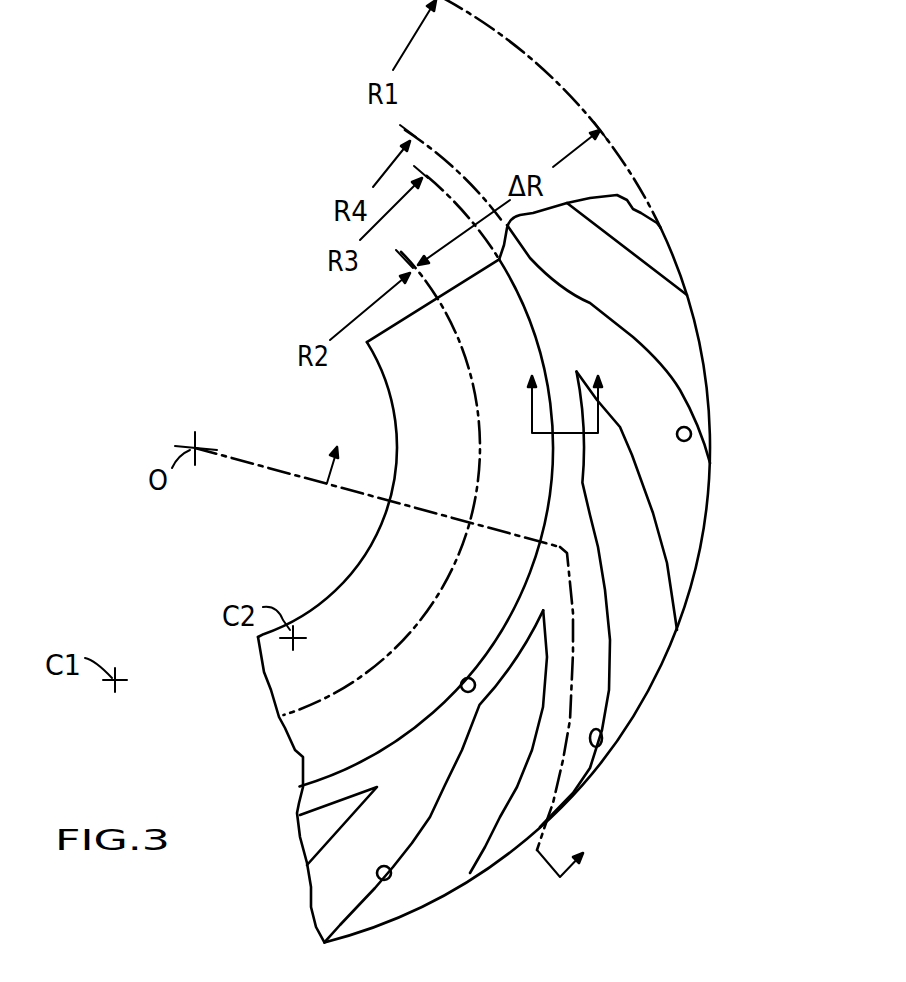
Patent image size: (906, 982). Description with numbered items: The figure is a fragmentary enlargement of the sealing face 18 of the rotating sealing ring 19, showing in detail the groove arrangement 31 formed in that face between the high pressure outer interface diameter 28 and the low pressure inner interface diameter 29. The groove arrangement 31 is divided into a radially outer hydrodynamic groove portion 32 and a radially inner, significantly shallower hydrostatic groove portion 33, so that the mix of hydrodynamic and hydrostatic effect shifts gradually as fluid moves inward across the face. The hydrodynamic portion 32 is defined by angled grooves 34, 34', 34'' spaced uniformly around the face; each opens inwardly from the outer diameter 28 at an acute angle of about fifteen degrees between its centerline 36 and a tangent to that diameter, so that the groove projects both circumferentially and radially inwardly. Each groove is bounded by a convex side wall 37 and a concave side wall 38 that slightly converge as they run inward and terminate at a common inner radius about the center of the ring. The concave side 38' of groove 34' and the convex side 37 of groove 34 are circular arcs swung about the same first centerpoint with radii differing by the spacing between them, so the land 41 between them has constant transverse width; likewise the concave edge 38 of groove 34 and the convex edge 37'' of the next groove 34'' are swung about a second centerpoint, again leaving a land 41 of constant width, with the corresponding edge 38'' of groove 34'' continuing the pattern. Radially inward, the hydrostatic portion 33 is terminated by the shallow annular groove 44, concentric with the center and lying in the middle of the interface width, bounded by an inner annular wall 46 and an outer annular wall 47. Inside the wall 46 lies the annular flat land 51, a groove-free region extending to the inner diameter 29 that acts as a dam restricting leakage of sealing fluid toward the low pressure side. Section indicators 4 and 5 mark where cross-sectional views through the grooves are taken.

The sealing face 18 is at (417, 584).
The sealing ring 19 is at (663, 230).
The outer interface diameter 28 is at (703, 340).
The inner interface diameter 29 is at (460, 343).
The groove arrangement 31 is at (617, 307).
The hydrodynamic groove portion 32 is at (307, 910).
The hydrostatic groove portion 33 is at (297, 808).
The angled groove 34 is at (608, 599).
The adjacent angled groove 34' is at (435, 796).
The next angled groove 34'' is at (740, 518).
The groove centerline 36 is at (573, 593).
The convex side wall 37 is at (517, 867).
The convex edge of next groove 37'' is at (732, 575).
The concave side wall 38 is at (634, 763).
The concave side of adjacent groove 38' is at (402, 918).
The oil hole 38'' is at (737, 442).
The land 41 is at (643, 663).
The shallow annular groove 44 is at (507, 647).
The inner annular wall 46 is at (461, 685).
The outer annular wall 47 is at (527, 620).
The annular flat land 51 is at (303, 757).
The section line 4- 4 is at (402, 647).
The section line 5- 5 is at (559, 402).